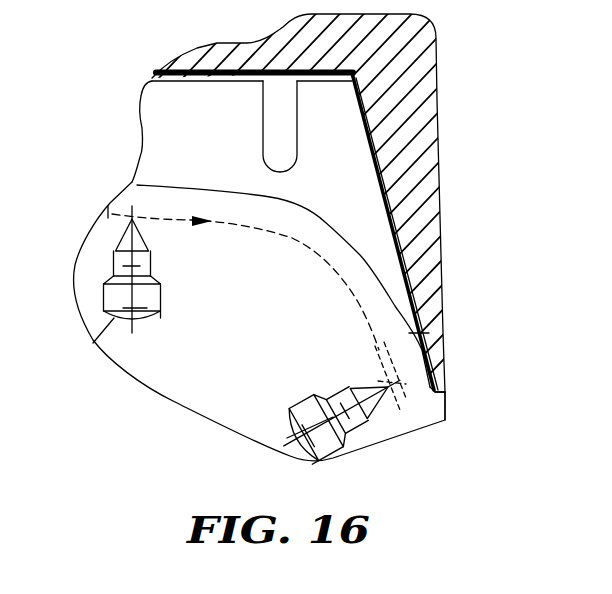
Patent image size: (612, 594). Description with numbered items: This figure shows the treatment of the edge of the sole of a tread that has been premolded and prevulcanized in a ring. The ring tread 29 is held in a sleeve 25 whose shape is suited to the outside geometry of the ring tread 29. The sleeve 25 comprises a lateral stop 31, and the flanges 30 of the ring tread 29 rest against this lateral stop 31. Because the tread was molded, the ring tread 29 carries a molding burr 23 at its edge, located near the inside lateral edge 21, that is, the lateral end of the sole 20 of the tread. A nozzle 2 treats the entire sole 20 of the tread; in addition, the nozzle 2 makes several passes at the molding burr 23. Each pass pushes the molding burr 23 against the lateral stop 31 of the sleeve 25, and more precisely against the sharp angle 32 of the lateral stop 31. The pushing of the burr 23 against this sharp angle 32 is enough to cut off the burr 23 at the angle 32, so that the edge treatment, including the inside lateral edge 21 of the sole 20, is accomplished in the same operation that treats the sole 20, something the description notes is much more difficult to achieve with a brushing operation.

The nozzle 2 is at (93, 340).
The sole 20 is at (133, 182).
The inside lateral edge 21 is at (428, 316).
The molding burr 23 is at (445, 396).
The sleeve 25 is at (190, 68).
The ring tread 29 is at (157, 115).
The flange 30 is at (398, 274).
The lateral stop 31 is at (422, 150).
The sharp angle 32 is at (445, 357).